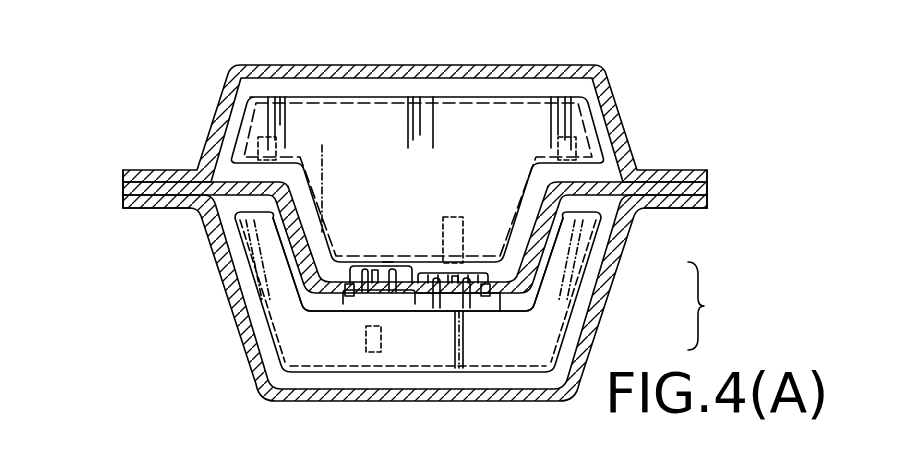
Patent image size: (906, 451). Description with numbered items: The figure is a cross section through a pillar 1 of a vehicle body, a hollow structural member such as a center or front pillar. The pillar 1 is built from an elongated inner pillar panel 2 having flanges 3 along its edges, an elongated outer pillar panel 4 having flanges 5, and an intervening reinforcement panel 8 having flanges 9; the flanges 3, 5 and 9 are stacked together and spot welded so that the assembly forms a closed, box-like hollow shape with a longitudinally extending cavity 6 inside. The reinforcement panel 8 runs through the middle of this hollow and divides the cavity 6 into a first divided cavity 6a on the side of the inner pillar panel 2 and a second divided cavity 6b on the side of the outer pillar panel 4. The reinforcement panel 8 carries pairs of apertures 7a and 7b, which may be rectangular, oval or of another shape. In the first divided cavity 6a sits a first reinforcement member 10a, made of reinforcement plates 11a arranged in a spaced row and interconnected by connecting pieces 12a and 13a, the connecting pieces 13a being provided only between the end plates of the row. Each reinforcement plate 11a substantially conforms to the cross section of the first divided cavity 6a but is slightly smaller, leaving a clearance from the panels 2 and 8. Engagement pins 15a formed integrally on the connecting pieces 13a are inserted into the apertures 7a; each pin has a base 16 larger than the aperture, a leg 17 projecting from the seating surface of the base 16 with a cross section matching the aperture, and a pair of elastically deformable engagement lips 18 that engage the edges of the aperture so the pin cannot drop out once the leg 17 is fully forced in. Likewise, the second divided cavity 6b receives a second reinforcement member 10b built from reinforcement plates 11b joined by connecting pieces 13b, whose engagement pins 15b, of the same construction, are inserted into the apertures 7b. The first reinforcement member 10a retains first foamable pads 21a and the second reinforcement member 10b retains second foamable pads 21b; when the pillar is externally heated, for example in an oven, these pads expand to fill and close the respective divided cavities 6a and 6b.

The pillar 1 is at (205, 100).
The inner pillar panel 2 is at (490, 62).
The flanges 3 is at (150, 168).
The outer pillar panel 4 is at (553, 404).
The flanges 5 is at (150, 205).
The cavity 6 is at (481, 292).
The first divided cavity 6a is at (563, 168).
The second divided cavity 6b is at (579, 304).
The apertures 7a is at (436, 278).
The apertures 7b is at (405, 302).
The reinforcement panel 8 is at (305, 260).
The flanges 9 is at (123, 190).
The first reinforcement member 10a is at (402, 92).
The second reinforcement member 10b is at (432, 372).
The reinforcement plates 11a is at (360, 106).
The reinforcement plates 11b is at (497, 345).
The connecting pieces 12a is at (284, 148).
The connecting pieces 13a is at (458, 217).
The connecting pieces 13b is at (372, 354).
The engagement pins 15a is at (456, 368).
The engagement pins 15b is at (388, 258).
The base 16 is at (426, 270).
The leg 17 is at (374, 270).
The engagement lips 18 is at (345, 290).
The first foamable pads 21a is at (442, 94).
The second foamable pads 21b is at (318, 372).